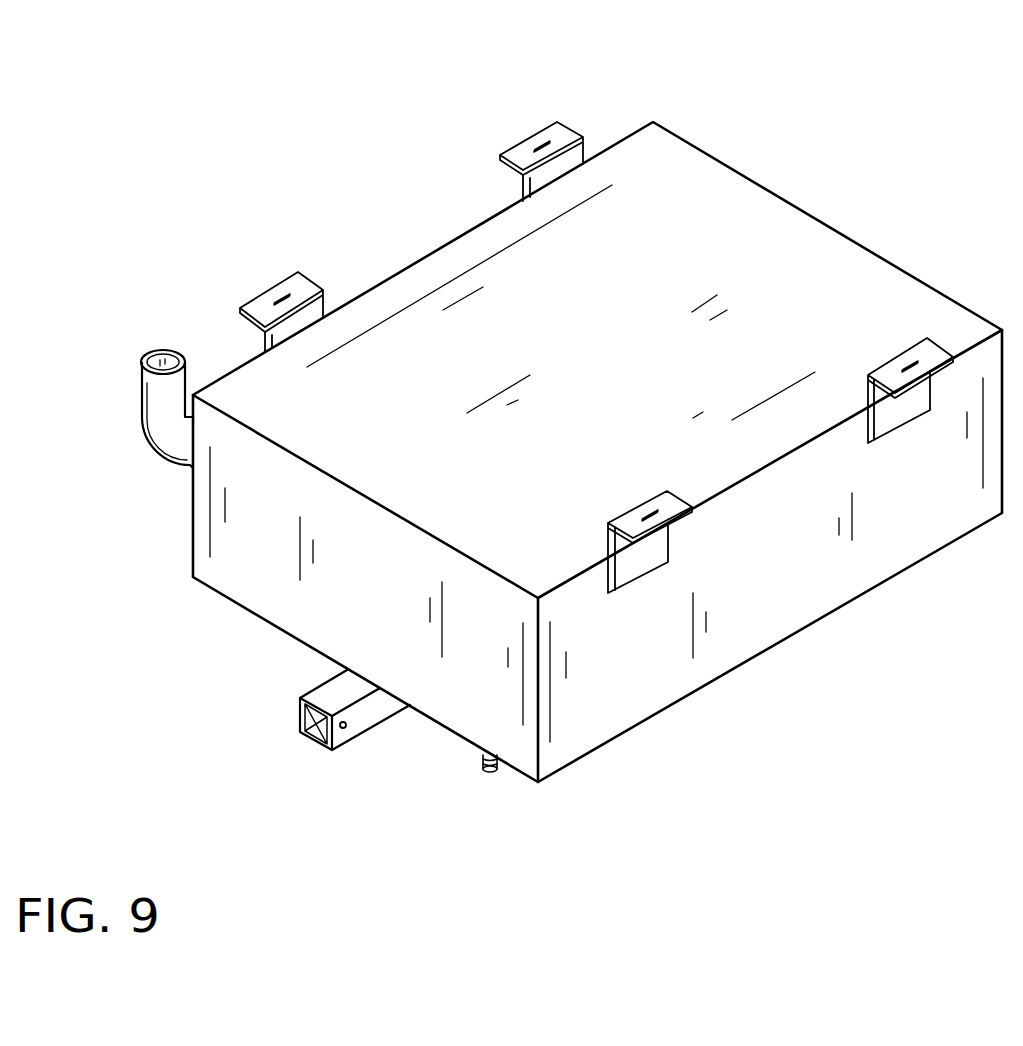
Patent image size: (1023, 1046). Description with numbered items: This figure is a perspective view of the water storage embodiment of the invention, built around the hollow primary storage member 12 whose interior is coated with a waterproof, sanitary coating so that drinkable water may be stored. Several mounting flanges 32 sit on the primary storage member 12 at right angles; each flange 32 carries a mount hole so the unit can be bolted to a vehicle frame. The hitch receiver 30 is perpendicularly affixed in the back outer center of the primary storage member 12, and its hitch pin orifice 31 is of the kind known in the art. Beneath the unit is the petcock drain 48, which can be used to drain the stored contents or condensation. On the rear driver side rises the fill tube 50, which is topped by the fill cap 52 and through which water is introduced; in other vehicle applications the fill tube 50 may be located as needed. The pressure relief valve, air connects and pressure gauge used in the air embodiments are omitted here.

The primary storage member 12 is at (858, 596).
The hitch receiver 30 is at (308, 742).
The hitch pin orifice 31 is at (343, 730).
The mounting flange 32 is at (557, 122).
The petcock drain 48 is at (490, 773).
The fill tube 50 is at (140, 397).
The fill cap 52 is at (167, 362).